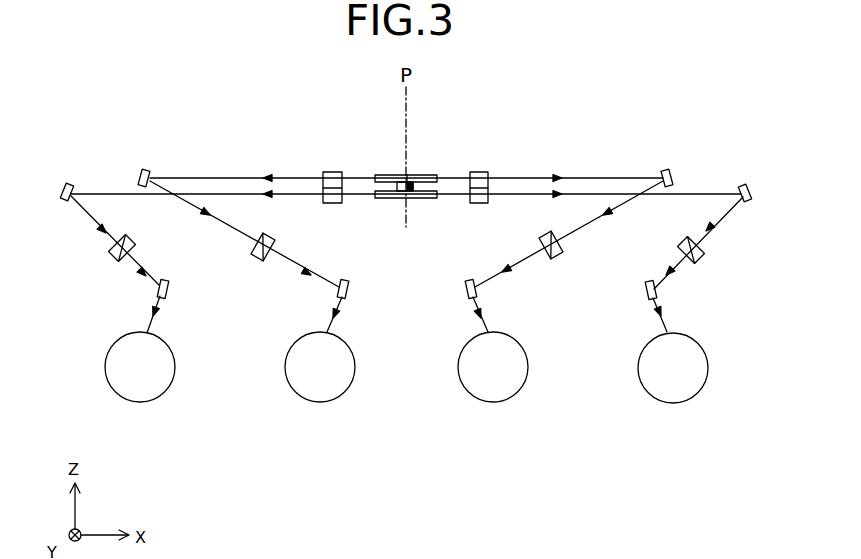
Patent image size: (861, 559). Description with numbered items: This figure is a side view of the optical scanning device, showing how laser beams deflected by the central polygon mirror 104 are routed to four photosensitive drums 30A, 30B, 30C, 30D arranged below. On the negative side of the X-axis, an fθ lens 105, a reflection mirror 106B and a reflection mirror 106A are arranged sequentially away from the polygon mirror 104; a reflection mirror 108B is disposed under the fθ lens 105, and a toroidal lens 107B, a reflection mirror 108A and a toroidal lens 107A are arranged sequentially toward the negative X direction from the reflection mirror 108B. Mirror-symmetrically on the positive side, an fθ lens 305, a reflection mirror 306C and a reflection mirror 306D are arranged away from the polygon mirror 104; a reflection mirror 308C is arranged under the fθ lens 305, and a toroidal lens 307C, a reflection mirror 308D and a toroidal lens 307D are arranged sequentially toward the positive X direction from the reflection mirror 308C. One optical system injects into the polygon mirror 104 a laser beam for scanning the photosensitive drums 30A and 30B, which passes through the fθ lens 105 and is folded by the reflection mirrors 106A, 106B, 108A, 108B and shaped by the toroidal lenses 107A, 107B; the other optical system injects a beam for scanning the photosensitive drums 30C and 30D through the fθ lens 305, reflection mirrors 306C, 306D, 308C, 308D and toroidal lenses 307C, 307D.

The polygon mirror 104 is at (392, 159).
The fθ lens 105 is at (322, 158).
The fθ lens 305 is at (496, 158).
The reflection mirror 106A is at (89, 161).
The reflection mirror 106B is at (163, 153).
The reflection mirror 306C is at (644, 153).
The reflection mirror 306D is at (721, 161).
The toroidal lens 107A is at (139, 234).
The toroidal lens 107B is at (298, 237).
The toroidal lens 307C is at (516, 237).
The toroidal lens 307D is at (675, 236).
The reflection mirror 108A is at (183, 275).
The reflection mirror 108B is at (363, 272).
The reflection mirror 308C is at (454, 270).
The reflection mirror 308D is at (632, 276).
The photosensitive drum 30A is at (158, 379).
The photosensitive drum 30B is at (340, 377).
The photosensitive drum 30C is at (513, 377).
The photosensitive drum 30D is at (694, 377).